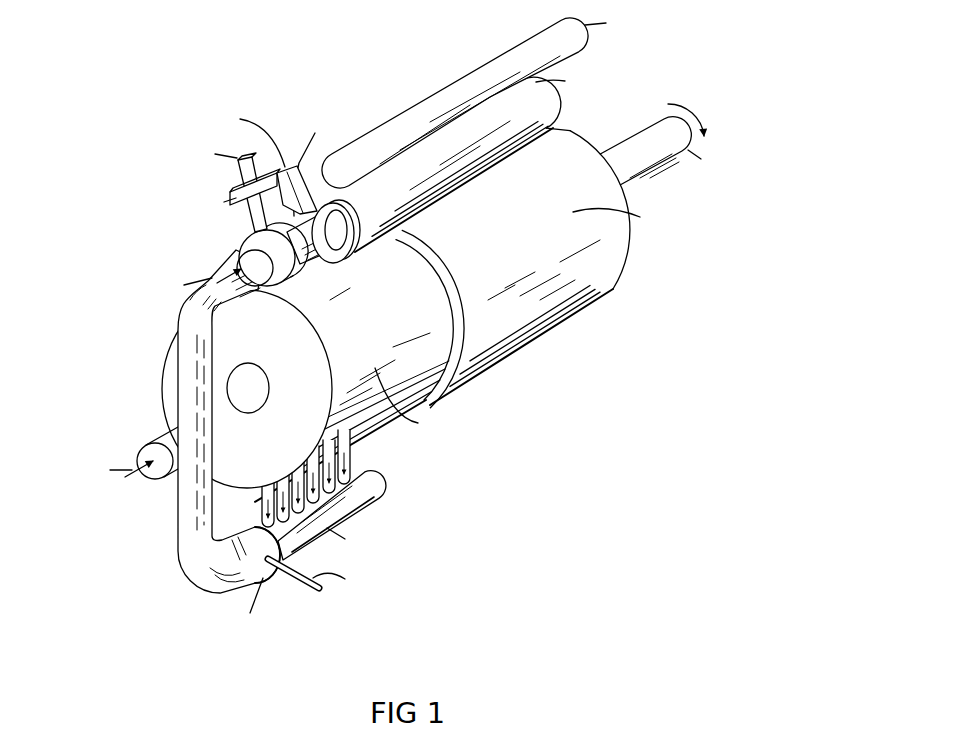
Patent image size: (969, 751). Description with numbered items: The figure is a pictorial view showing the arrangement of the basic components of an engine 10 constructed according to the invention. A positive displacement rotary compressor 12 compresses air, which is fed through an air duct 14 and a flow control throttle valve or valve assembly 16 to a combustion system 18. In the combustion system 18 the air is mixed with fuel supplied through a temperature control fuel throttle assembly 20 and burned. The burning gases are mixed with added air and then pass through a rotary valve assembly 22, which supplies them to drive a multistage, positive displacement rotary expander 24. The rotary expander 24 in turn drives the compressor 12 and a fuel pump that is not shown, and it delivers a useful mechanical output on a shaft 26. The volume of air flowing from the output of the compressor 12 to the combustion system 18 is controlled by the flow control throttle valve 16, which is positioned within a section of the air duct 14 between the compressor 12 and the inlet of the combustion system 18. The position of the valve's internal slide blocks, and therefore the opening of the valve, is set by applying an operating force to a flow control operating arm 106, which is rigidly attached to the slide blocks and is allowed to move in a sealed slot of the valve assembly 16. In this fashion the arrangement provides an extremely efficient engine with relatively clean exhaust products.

The engine 10 is at (156, 356).
The positive displacement rotary compressor 12 is at (370, 428).
The air duct 14 is at (388, 490).
The flow control throttle valve 16 is at (258, 535).
The combustion system 18 is at (314, 258).
The temperature control fuel throttle assembly 20 is at (243, 209).
The rotary valve assembly 22 is at (483, 98).
The positive displacement rotary expander 24 is at (617, 254).
The shaft 26 is at (648, 128).
The flow control operating arm 106 is at (283, 574).